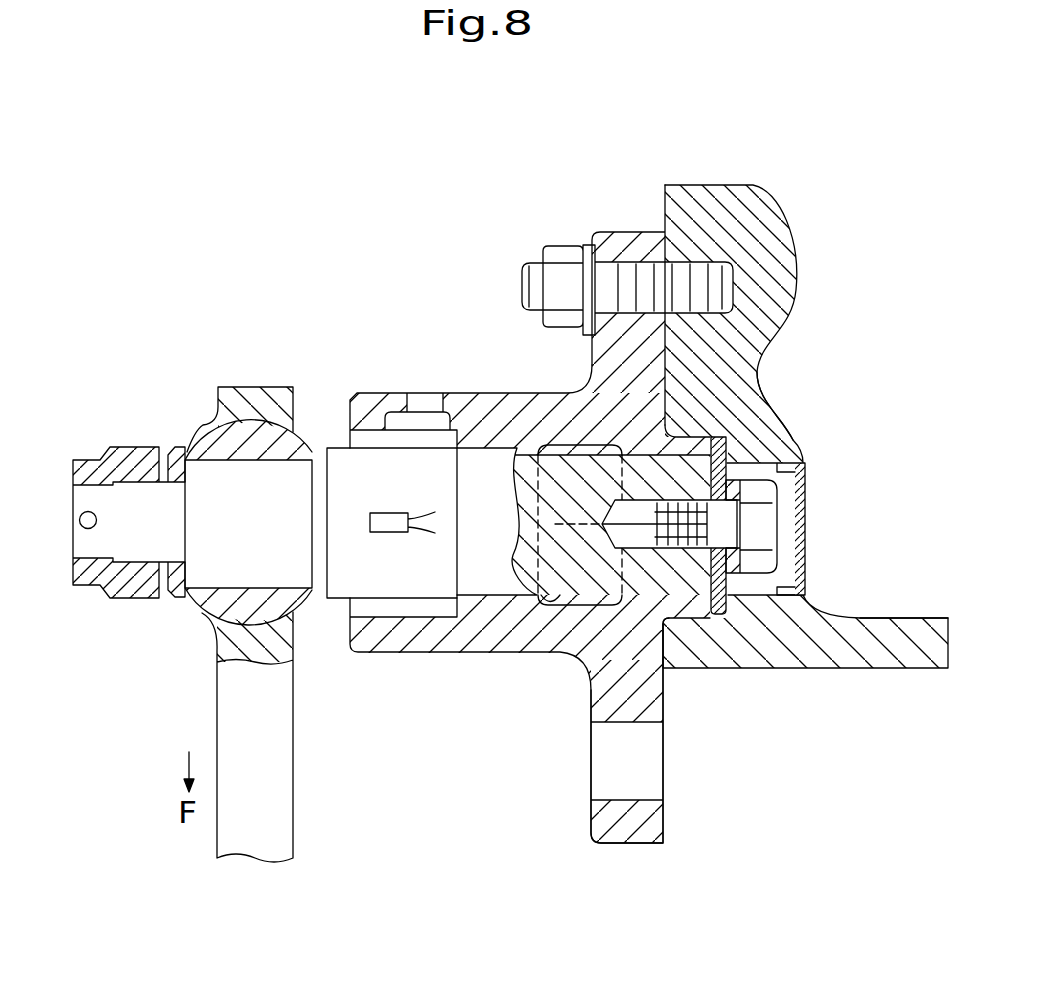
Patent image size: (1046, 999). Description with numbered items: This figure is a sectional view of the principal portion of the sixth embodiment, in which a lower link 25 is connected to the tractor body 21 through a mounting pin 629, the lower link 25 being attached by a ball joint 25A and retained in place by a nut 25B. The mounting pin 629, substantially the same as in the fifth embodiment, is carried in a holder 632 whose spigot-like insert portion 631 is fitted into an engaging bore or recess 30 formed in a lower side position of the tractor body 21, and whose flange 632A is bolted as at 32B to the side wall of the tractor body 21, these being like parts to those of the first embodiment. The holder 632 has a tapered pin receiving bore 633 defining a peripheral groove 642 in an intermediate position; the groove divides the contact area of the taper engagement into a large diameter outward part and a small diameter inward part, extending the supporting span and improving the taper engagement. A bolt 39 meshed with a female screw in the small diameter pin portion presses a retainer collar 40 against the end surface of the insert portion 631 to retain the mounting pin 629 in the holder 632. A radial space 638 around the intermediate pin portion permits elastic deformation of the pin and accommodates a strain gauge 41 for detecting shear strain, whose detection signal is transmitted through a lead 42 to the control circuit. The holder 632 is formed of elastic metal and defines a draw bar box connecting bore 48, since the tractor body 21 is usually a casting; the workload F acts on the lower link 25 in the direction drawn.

The tractor body 21 is at (826, 668).
The lower link 25 is at (283, 808).
The ball joint 25A is at (253, 433).
The nut 25B is at (122, 585).
The engaging bore 30 is at (762, 470).
The bolt 32B is at (553, 248).
The bolt 39 is at (765, 565).
The retainer collar 40 is at (722, 616).
The strain gauge 41 is at (388, 535).
The lead 42 is at (805, 507).
The draw bar box connecting bore 48 is at (647, 780).
The mounting pin 629 is at (226, 570).
The bracket portion 631 is at (698, 430).
The holder 632 is at (412, 652).
The mounting flange 632A is at (617, 232).
The tapered pin receiving bore 633 is at (474, 455).
The pin 638 is at (370, 440).
The peripheral groove 642 is at (560, 605).